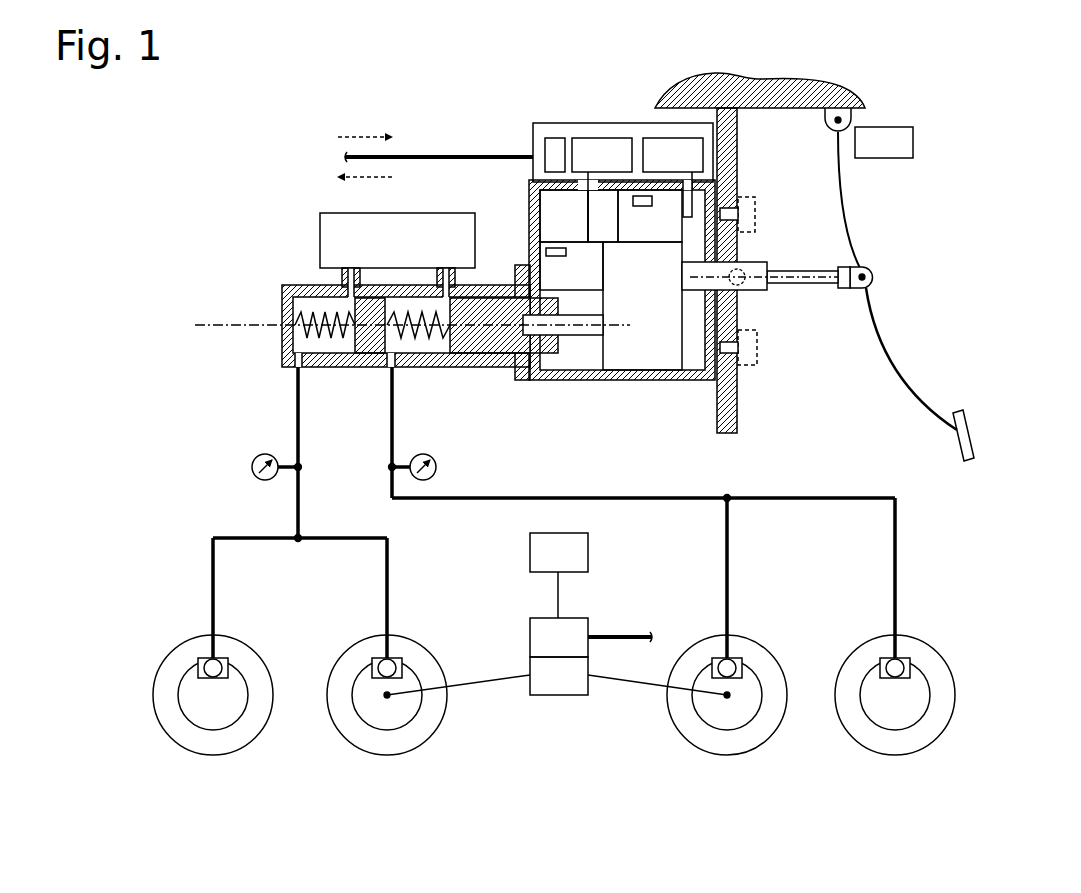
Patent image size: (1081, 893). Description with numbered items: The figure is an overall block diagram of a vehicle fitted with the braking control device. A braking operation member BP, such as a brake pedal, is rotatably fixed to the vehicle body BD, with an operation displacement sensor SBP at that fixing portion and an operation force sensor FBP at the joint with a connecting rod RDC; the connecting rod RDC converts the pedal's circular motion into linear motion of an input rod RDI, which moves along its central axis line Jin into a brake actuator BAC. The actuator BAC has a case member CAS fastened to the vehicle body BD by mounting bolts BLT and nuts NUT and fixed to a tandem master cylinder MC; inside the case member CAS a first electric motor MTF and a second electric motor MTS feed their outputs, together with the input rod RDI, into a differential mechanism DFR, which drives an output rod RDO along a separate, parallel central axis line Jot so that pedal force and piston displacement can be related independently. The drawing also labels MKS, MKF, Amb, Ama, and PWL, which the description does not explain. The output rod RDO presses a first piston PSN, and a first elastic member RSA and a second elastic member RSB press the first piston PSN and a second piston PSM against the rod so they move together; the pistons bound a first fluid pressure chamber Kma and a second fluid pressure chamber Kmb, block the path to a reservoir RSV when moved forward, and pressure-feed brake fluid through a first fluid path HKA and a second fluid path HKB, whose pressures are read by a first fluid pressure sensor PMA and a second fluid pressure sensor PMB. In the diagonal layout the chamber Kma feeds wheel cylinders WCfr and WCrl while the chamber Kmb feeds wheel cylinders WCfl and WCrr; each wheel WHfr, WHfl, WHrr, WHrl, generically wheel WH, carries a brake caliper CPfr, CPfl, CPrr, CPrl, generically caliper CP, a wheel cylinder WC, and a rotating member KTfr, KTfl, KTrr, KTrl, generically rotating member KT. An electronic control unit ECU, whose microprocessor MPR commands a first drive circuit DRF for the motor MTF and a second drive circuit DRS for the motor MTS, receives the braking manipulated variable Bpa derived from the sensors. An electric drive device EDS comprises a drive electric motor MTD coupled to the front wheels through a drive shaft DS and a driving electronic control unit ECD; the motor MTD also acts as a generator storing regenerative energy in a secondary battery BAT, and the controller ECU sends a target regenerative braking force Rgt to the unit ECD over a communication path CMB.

The vehicle body BD is at (740, 413).
The braking operation member BP is at (917, 383).
The operation displacement sensor SBP is at (884, 142).
The operation force sensor FBP is at (845, 289).
The input rod RDI is at (752, 264).
The connecting rod RDC is at (780, 277).
The electronic control unit ECU is at (606, 125).
The microprocessor MPR is at (548, 150).
The second drive circuit DRS is at (602, 155).
The first drive circuit DRF is at (673, 155).
The communication path CMB is at (454, 155).
The manipulated variable Bpa is at (272, 135).
The target value of regenerative braking force Rgt is at (341, 178).
The brake actuator BAC is at (594, 318).
The case member CAS is at (663, 377).
The case of electric motor MKS is at (535, 230).
The first electric motor MTF is at (611, 216).
The rotation angle sensor of feedback motor MKF is at (642, 196).
The second electric motor MTS is at (571, 266).
The differential mechanism DFR is at (642, 306).
The central axis line of input rod Jin is at (672, 277).
The mounting bolts BLT is at (752, 343).
The nuts NUT is at (748, 365).
The tandem master cylinder MC is at (387, 348).
The rear port of master cylinder Amb is at (295, 367).
The front port of master cylinder Ama is at (384, 380).
The second piston PSM is at (372, 345).
The first fluid pressure chamber Kma is at (445, 350).
The second fluid pressure chamber Kmb is at (297, 305).
The output rod RDO is at (563, 332).
The second elastic member RSB is at (297, 335).
The first elastic member RSA is at (413, 340).
The central axis line of output rod Jot is at (195, 325).
The first piston PSN is at (515, 347).
The reserver RSV is at (397, 240).
The second fluid path HKB is at (300, 503).
The first fluid path HKA is at (500, 496).
The second fluid pressure sensor PMB is at (268, 453).
The first fluid pressure sensor PMA is at (418, 453).
The secondary battery BAT is at (559, 552).
The power line PWL is at (556, 594).
The electric drive device EDS is at (554, 701).
The driving electronic control unit ECD is at (559, 637).
The drive electric motor MTD is at (559, 676).
The drive shaft DS is at (500, 686).
The right rear wheel WHrr is at (238, 710).
The rotating member KTrr is at (213, 695).
The brake caliper CPrr is at (228, 668).
The wheel cylinder WCrr is at (221, 661).
The left front wheel WHfl is at (410, 710).
The rotating member KTfl is at (410, 713).
The brake caliper CPfl is at (402, 668).
The wheel cylinder WCfl is at (395, 661).
The right front wheel WHfr is at (725, 710).
The rotating member KTfr is at (700, 713).
The brake caliper CPfr is at (742, 668).
The wheel cylinder WCfr is at (735, 661).
The left rear wheel WHrl is at (948, 710).
The rotating member KTrl is at (958, 706).
The brake caliper CPrl is at (970, 664).
The wheel cylinder WCrl is at (970, 652).
The wheel WH is at (948, 710).
The rotating member KT is at (925, 712).
The brake caliper CP is at (910, 668).
The wheel cylinder WC is at (903, 661).